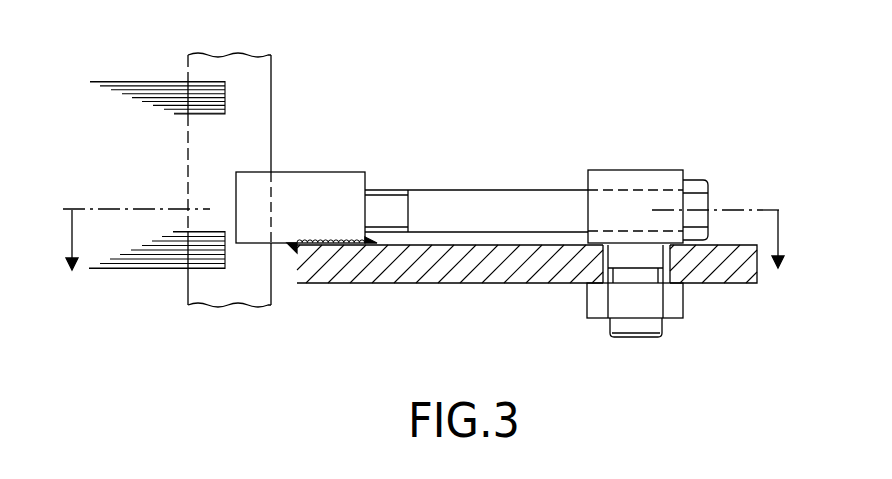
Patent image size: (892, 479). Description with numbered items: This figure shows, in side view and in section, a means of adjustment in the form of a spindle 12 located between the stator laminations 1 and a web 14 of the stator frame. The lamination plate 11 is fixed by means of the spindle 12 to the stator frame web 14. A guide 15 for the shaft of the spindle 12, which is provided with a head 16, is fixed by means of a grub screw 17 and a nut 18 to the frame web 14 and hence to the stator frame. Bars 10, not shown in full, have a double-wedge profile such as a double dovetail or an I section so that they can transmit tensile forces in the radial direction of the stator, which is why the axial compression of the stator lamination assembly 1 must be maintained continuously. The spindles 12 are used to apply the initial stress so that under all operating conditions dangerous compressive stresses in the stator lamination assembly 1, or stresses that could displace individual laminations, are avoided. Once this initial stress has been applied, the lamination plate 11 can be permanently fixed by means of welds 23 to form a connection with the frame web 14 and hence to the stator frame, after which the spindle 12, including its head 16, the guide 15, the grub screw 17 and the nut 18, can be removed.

The stator laminations 1 is at (140, 120).
The bar 10 is at (255, 74).
The lamination plate 11 is at (286, 179).
The spindle 12 is at (444, 196).
The web of the frame 14 is at (376, 267).
The guide 15 is at (620, 178).
The head 16 is at (695, 181).
The grub screw 17 is at (644, 332).
The nut 18 is at (677, 305).
The weld 23 is at (313, 229).